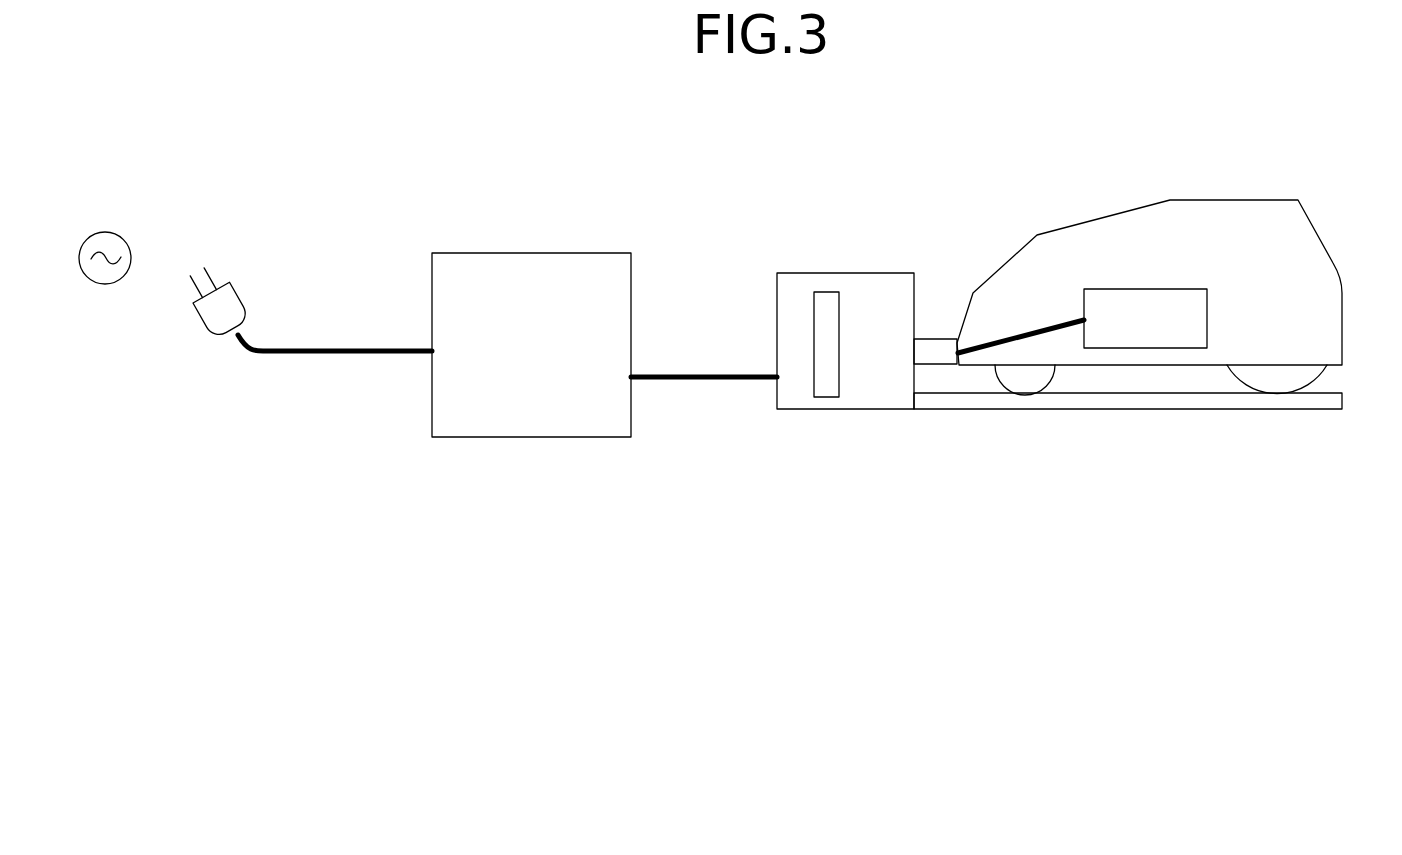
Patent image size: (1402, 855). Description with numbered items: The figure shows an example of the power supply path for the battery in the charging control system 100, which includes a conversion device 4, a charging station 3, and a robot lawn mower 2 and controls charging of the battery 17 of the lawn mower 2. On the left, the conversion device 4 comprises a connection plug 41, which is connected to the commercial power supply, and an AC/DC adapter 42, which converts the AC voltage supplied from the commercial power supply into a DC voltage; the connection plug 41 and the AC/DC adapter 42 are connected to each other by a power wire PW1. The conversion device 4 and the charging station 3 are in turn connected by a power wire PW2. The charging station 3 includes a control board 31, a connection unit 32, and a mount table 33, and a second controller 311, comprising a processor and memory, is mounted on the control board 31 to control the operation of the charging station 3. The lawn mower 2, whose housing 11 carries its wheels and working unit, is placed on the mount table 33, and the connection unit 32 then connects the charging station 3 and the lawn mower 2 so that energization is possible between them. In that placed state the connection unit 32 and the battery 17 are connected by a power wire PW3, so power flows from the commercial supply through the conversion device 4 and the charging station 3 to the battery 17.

The charging control system 100 is at (708, 512).
The robot lawn mower 2 is at (1273, 167).
The housing 11 is at (1318, 235).
The battery 17 is at (1148, 288).
The charging station 3 is at (852, 210).
The control board 31 is at (823, 398).
The second controller 311 is at (826, 344).
The connection unit 32 is at (928, 339).
The mount table 33 is at (1148, 402).
The conversion device 4 is at (603, 218).
The connection plug 41 is at (245, 292).
The AC/DC adapter 42 is at (503, 253).
The power wire PW1 is at (327, 347).
The power wire PW2 is at (678, 377).
The power wire PW3 is at (1030, 330).